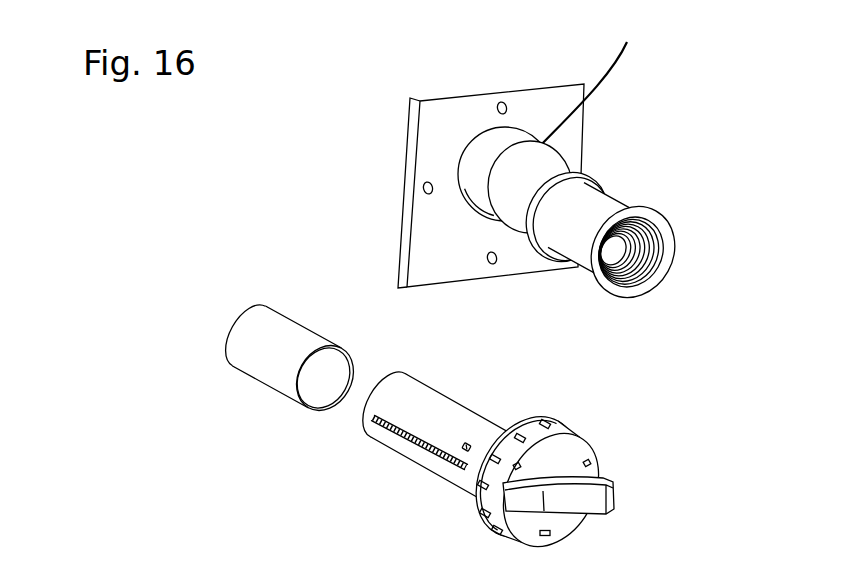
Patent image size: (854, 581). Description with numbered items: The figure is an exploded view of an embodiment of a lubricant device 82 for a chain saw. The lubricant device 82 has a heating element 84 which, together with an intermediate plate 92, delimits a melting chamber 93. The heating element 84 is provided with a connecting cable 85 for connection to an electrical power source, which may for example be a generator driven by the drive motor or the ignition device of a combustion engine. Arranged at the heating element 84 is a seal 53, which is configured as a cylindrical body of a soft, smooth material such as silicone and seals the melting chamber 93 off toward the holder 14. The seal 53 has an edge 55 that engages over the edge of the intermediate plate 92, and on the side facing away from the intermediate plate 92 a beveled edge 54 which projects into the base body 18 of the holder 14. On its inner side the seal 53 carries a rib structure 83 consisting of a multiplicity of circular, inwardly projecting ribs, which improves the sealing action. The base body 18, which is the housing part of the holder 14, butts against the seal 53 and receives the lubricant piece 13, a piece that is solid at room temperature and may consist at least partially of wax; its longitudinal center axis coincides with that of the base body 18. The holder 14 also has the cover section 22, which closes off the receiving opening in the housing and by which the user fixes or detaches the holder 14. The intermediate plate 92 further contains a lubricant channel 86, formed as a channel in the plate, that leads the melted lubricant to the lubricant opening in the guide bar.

The lubricant piece 13 is at (255, 363).
The holder 14 is at (494, 459).
The base body 18 is at (450, 408).
The cover section 22 is at (588, 445).
The seal 53 is at (588, 203).
The edge of the seal 54 is at (667, 248).
The edge of the seal 55 is at (585, 177).
The lubricant device 82 is at (530, 177).
The rib structure 83 is at (647, 222).
The heating element 84 is at (498, 190).
The connecting cable 85 is at (618, 67).
The lubricant channel 86 is at (489, 221).
The intermediate plate 92 is at (420, 132).
The melting chamber 93 is at (462, 172).